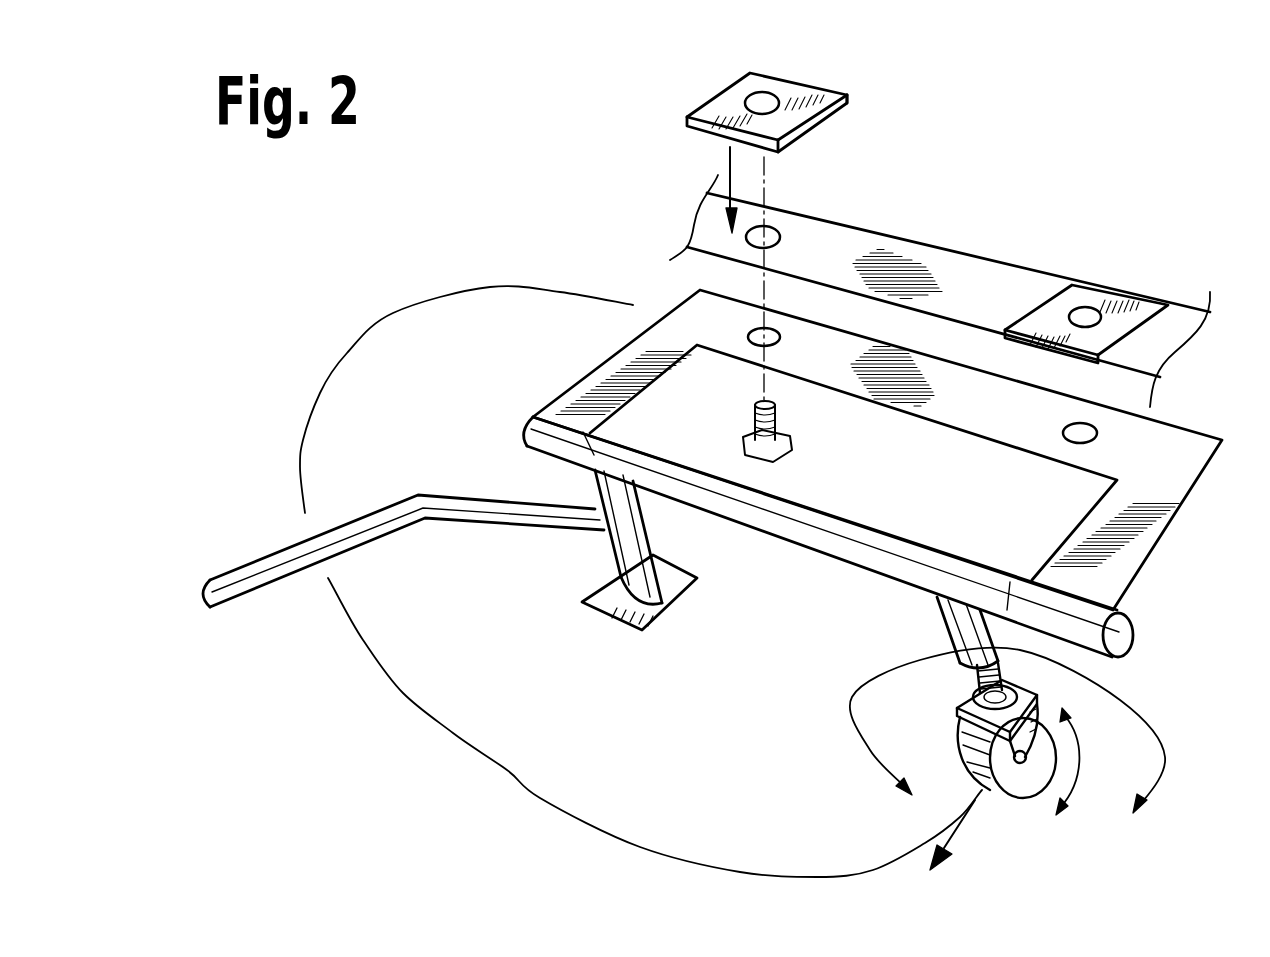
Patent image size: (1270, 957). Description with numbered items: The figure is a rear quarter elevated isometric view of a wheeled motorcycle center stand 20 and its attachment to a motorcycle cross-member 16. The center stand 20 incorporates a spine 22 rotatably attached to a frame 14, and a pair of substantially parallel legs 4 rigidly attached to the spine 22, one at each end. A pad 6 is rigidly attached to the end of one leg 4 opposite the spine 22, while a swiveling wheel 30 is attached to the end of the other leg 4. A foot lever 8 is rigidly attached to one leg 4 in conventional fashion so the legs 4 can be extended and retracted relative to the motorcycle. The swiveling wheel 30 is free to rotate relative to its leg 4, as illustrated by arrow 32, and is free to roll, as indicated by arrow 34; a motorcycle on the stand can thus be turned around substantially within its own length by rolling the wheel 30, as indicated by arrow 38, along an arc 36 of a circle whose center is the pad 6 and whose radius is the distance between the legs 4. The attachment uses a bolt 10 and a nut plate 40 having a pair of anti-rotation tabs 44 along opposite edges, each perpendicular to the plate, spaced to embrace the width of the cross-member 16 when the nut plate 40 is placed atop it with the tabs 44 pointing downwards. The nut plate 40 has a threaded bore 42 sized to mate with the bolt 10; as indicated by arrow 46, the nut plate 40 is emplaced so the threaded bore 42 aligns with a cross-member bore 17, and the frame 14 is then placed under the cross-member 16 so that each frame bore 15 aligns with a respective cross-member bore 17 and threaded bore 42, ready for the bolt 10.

The leg 4 is at (620, 553).
The pad 6 is at (610, 612).
The foot lever 8 is at (224, 580).
The bolt 10 is at (787, 441).
The frame 14 is at (1097, 515).
The frame bore 15 is at (777, 331).
The motorcycle cross-member 16 is at (972, 285).
The cross-member bore 17 is at (778, 232).
The wheeled motorcycle center stand 20 is at (466, 256).
The spine 22 is at (819, 515).
The swiveling wheel 30 is at (973, 737).
The arrow 32 is at (840, 698).
The arrow 34 is at (1087, 760).
The arc 36 is at (820, 875).
The arrow 38 is at (960, 823).
The nut plate 40 is at (707, 112).
The nut plate threaded bore 42 is at (748, 93).
The anti-rotation tab 44 is at (849, 100).
The arrow 46 is at (730, 158).